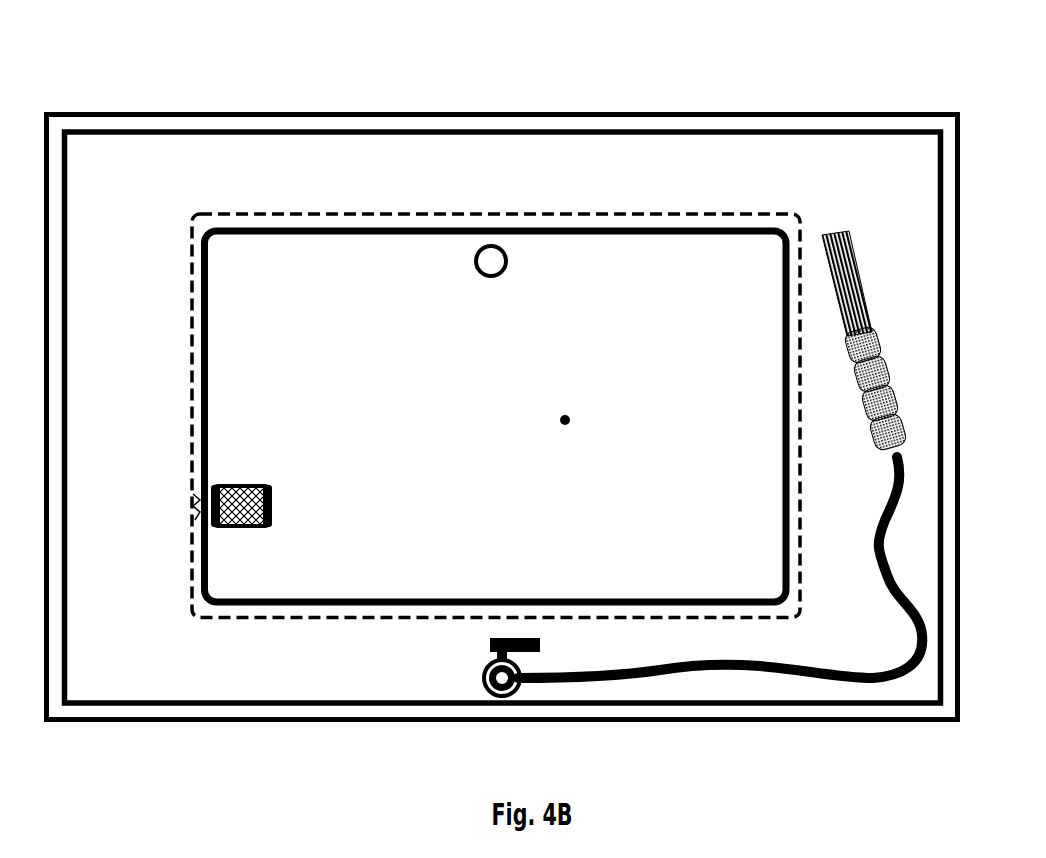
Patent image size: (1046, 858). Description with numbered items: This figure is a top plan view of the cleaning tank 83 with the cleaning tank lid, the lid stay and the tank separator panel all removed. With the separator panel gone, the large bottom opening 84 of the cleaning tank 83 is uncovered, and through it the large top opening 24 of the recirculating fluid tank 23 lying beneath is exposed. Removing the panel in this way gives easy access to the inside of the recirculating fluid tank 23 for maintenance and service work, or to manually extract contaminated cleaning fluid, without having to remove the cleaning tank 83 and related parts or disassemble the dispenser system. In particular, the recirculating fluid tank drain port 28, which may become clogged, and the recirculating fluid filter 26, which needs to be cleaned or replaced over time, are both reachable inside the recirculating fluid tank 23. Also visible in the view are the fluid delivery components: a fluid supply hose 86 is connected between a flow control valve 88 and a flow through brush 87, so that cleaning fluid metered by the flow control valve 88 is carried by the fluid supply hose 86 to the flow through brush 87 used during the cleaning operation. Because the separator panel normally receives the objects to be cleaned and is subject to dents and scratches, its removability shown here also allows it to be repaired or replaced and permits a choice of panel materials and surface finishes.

The cleaning tank 83 is at (283, 112).
The large top opening 24 is at (332, 213).
The large bottom opening 84 is at (212, 298).
The recirculating fluid tank drain port 28 is at (508, 259).
The recirculating fluid tank 23 is at (570, 424).
The recirculating fluid filter 26 is at (257, 483).
The flow control valve 88 is at (483, 679).
The fluid supply hose 86 is at (845, 672).
The flow through brush 87 is at (883, 347).